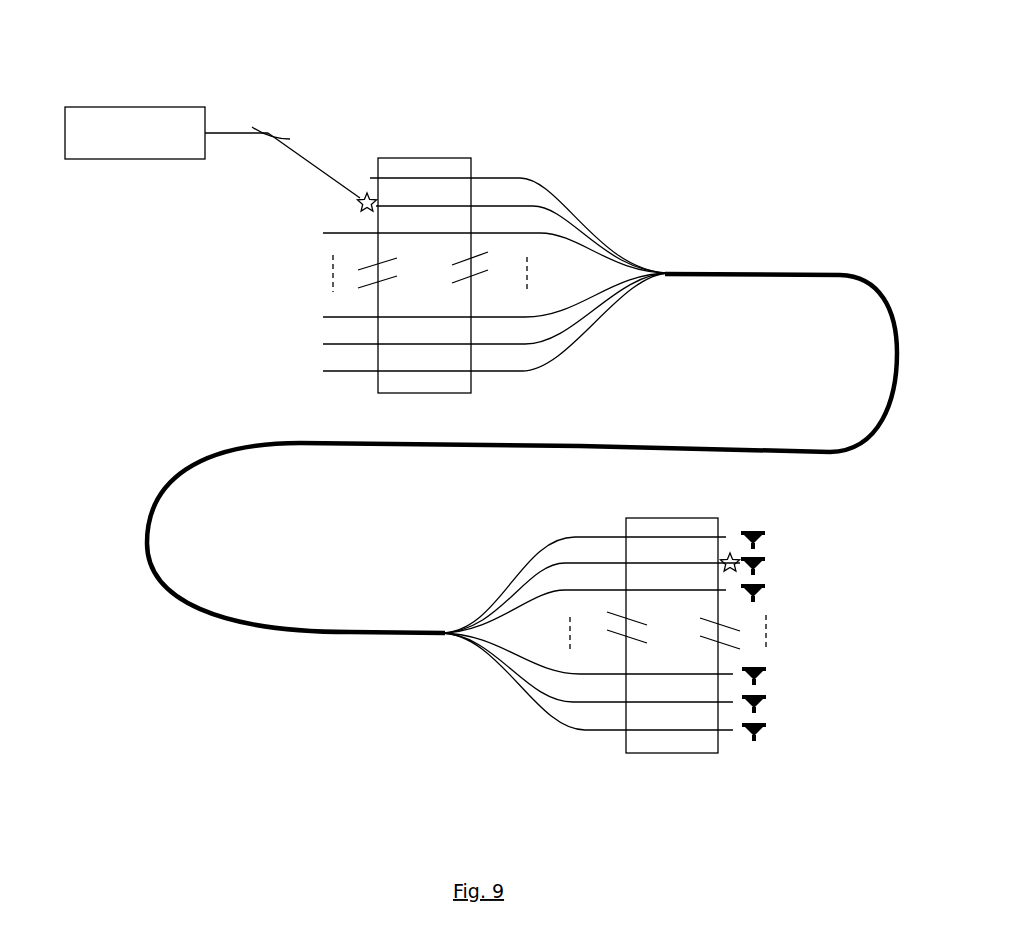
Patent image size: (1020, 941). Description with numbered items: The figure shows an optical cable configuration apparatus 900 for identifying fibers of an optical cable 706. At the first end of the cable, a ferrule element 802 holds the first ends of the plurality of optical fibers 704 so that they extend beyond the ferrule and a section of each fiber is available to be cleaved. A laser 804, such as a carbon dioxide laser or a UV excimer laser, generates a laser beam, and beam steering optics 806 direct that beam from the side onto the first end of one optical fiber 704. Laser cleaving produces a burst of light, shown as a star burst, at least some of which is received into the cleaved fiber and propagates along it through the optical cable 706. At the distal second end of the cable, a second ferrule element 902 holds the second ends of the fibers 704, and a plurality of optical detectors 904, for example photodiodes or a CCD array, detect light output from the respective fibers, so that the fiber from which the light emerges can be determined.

The optical cable configuration apparatus 900 is at (622, 67).
The laser 804 is at (163, 127).
The beam steering optics 806 is at (282, 133).
The ferrule element 802 is at (409, 165).
The optical fibers 704 is at (506, 175).
The optical cable 706 is at (785, 272).
The ferrule element 902 is at (657, 743).
The optical detectors 904 is at (753, 523).